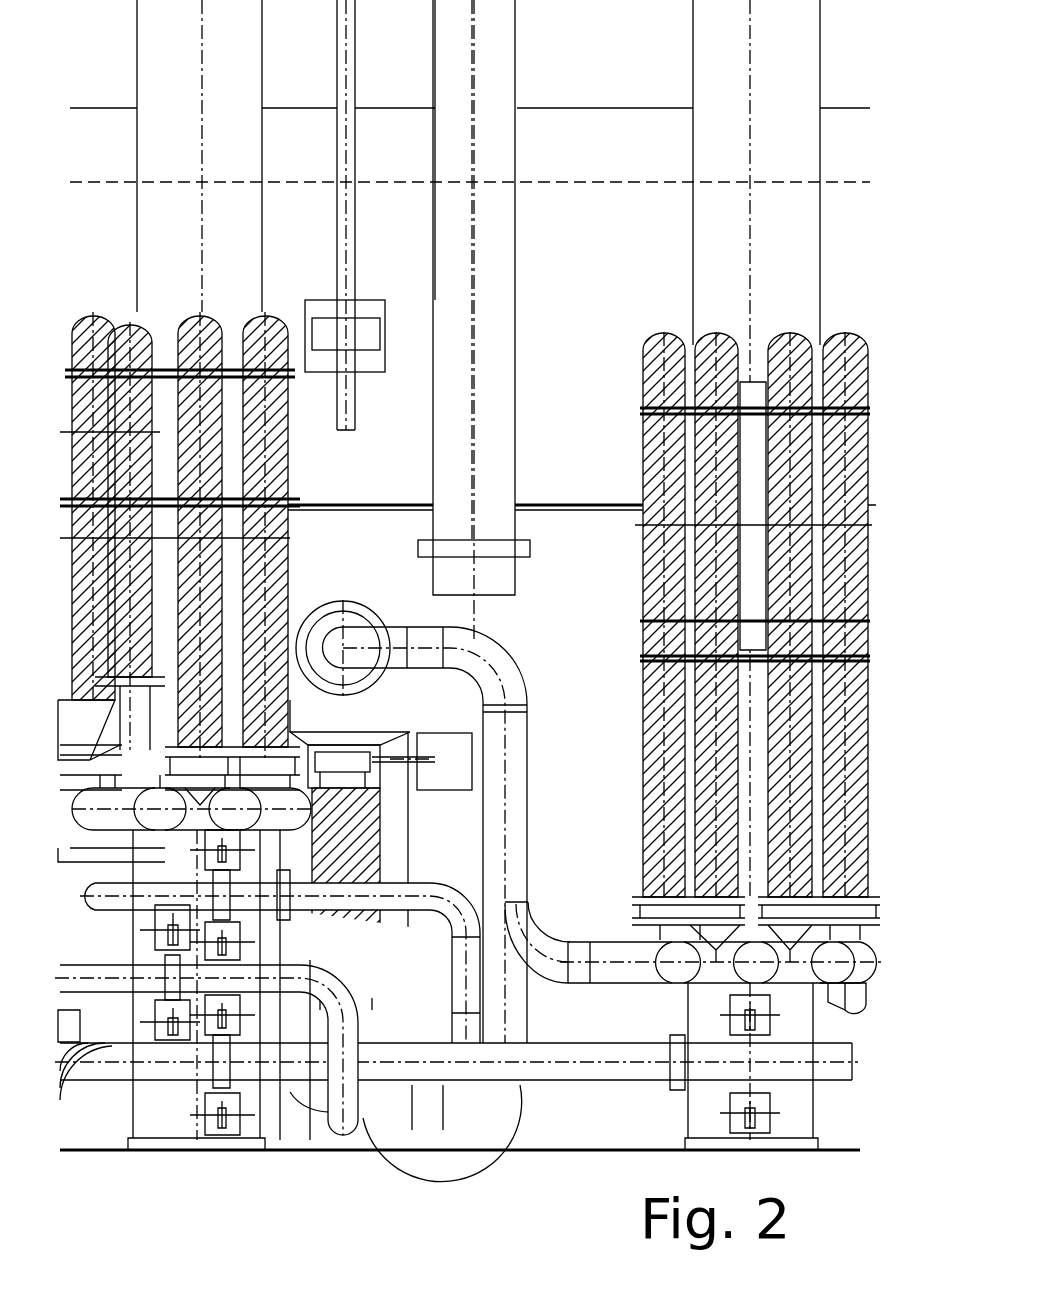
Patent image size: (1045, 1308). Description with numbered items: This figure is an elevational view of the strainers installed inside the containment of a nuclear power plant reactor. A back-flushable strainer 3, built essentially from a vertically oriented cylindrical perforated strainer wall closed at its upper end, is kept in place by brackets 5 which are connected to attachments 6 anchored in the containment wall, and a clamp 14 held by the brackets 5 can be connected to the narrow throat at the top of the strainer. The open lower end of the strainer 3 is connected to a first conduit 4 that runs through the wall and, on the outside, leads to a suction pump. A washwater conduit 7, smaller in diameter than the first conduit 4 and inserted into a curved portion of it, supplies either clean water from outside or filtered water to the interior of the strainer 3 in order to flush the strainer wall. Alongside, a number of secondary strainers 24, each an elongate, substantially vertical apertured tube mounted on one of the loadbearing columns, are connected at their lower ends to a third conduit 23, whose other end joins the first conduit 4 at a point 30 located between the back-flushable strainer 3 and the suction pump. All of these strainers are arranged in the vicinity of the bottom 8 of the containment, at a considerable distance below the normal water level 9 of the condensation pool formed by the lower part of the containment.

The normal water level 9 is at (595, 108).
The first conduit 4 is at (415, 625).
The secondary strainers 24 is at (650, 578).
The clamp 14 is at (335, 760).
The brackets 5 is at (398, 757).
The attachments 6 is at (462, 756).
The back-flushable strainer 3 is at (388, 855).
The interconnection point 30 is at (538, 937).
The third conduit 23 is at (598, 975).
The bottom 8 is at (585, 1147).
The washwater conduit 7 is at (325, 1105).